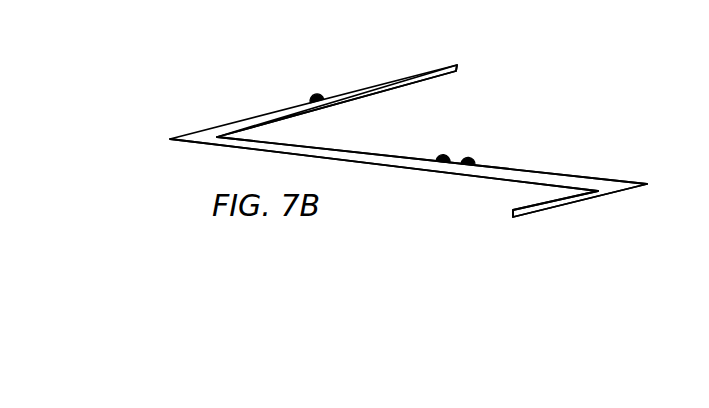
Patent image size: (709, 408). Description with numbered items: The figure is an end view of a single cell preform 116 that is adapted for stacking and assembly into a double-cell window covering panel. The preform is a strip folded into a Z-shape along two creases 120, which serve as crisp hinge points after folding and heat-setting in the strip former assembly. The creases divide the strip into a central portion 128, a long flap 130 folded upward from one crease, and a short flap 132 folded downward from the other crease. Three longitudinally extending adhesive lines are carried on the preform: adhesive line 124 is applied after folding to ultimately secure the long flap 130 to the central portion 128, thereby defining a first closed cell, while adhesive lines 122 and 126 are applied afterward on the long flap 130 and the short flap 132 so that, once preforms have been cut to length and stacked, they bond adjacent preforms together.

The preform 116 is at (465, 132).
The creases 120 is at (170, 139).
The adhesive line 122 is at (316, 93).
The adhesive line 124 is at (441, 155).
The adhesive line 126 is at (471, 158).
The central portion 128 is at (413, 170).
The long flap 130 is at (433, 66).
The short flap 132 is at (548, 208).